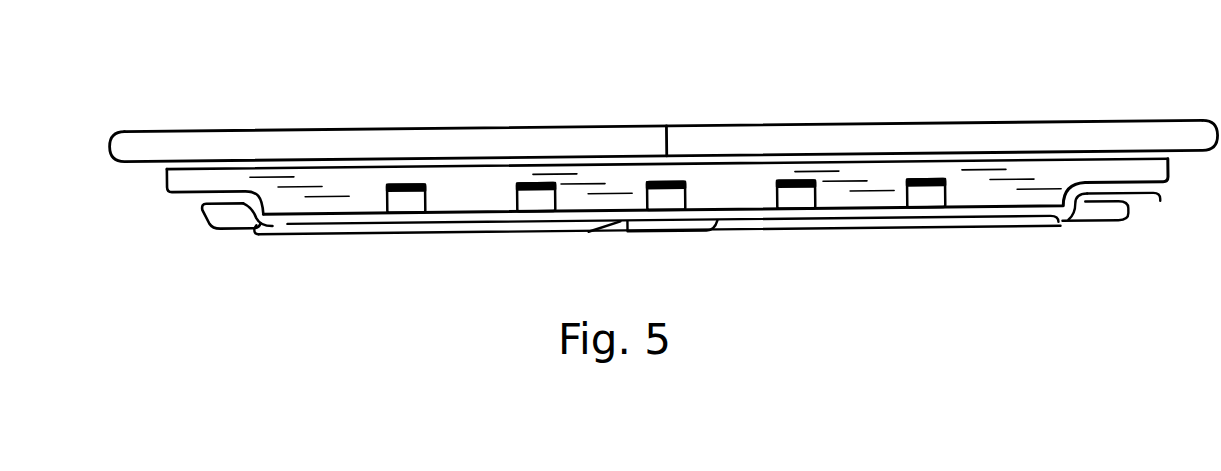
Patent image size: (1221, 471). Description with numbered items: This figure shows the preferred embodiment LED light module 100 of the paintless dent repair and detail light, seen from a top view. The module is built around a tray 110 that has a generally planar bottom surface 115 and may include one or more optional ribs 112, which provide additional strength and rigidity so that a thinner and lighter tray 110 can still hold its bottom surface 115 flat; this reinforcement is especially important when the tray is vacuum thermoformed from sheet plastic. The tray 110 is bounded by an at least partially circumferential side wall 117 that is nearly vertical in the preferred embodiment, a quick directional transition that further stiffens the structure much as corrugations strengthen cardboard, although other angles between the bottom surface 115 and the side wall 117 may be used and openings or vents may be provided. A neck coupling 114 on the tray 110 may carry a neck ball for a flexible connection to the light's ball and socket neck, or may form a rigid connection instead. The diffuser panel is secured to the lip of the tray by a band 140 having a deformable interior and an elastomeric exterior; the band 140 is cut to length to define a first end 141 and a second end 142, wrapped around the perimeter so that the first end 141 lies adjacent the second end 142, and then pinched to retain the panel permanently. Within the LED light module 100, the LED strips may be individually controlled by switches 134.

The LED light module 100 is at (913, 88).
The band 140 is at (363, 138).
The second end 142 is at (580, 140).
The first end 141 is at (732, 137).
The side wall 117 is at (162, 170).
The tray 110 is at (533, 232).
The ribs 112 is at (378, 235).
The neck coupling 114 is at (709, 238).
The switches 134 is at (913, 208).
The bottom surface 115 is at (983, 208).